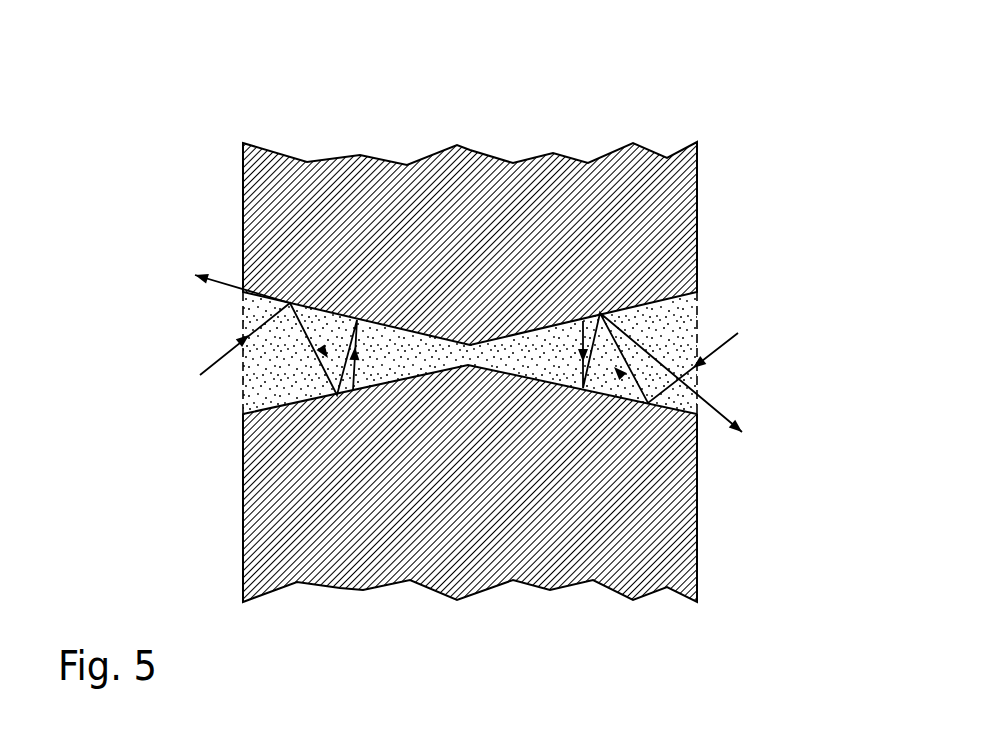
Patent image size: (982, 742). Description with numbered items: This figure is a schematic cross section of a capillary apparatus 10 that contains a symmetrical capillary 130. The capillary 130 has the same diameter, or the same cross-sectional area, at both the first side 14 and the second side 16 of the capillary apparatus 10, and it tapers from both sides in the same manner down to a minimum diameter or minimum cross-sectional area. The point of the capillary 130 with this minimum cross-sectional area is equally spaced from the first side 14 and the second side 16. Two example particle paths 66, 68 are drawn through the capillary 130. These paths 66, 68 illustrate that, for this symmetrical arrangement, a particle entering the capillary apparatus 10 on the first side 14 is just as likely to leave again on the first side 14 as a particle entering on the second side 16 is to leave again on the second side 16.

The capillary apparatus 10 is at (503, 175).
The first side 14 is at (242, 163).
The second side 16 is at (697, 162).
The symmetrical capillary 130 is at (673, 310).
The path of a first particle 66 is at (200, 375).
The path of a second particle 68 is at (738, 333).